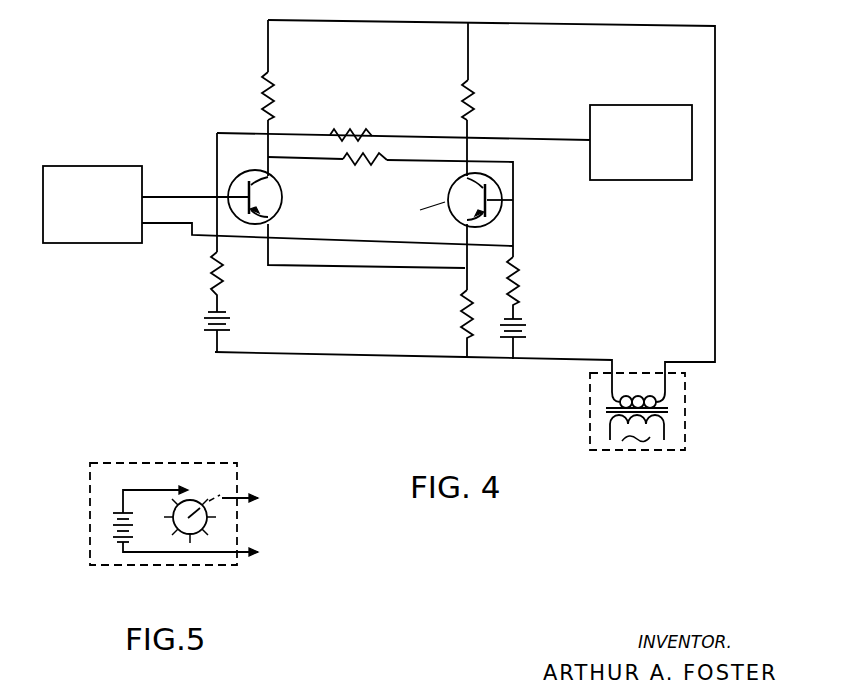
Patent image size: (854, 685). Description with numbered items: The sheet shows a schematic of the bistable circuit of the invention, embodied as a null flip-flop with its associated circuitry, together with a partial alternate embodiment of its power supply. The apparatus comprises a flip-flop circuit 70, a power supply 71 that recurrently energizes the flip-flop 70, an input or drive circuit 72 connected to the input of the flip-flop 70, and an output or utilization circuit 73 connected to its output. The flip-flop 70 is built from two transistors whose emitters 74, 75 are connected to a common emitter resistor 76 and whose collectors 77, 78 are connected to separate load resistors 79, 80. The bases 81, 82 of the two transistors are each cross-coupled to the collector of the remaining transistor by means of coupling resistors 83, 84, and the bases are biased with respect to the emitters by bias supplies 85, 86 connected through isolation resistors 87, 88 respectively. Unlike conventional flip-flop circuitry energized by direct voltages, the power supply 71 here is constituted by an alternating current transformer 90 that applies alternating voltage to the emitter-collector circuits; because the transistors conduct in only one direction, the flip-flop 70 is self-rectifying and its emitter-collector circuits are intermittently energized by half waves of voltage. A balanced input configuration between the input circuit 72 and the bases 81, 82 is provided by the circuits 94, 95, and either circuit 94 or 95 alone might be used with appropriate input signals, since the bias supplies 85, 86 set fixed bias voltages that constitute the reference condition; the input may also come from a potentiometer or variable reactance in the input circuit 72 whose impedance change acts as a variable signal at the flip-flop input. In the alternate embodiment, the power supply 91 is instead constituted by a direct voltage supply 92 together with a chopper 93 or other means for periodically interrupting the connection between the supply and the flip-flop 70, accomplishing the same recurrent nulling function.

In FIG. 4, the flip-flop circuit 70 is at (413, 372).
In FIG. 4, the power supply 71 is at (590, 413).
In FIG. 4, the input circuit 72 is at (89, 245).
In FIG. 4, the output circuit 73 is at (634, 181).
In FIG. 4, the emitter 74 is at (271, 212).
In FIG. 4, the emitter 75 is at (466, 213).
In FIG. 4, the common emitter resistor 76 is at (461, 309).
In FIG. 4, the collector 77 is at (271, 182).
In FIG. 4, the collector 78 is at (465, 189).
In FIG. 4, the load resistor 79 is at (277, 82).
In FIG. 4, the load resistor 80 is at (462, 89).
In FIG. 4, the base 81 is at (250, 186).
In FIG. 4, the base 82 is at (500, 189).
In FIG. 4, the coupling resistor 83 is at (350, 130).
In FIG. 4, the coupling resistor 84 is at (385, 166).
In FIG. 4, the bias supply 85 is at (222, 333).
In FIG. 4, the bias supply 86 is at (520, 340).
In FIG. 4, the isolation resistor 87 is at (222, 280).
In FIG. 4, the isolation resistor 88 is at (518, 285).
In FIG. 4, the alternating current transformer 90 is at (680, 406).
In FIG. 5, the power supply 91 is at (140, 463).
In FIG. 5, the direct voltage supply 92 is at (112, 522).
In FIG. 5, the chopper 93 is at (195, 500).
In FIG. 4, the circuit 94 is at (184, 196).
In FIG. 4, the circuit 95 is at (176, 226).